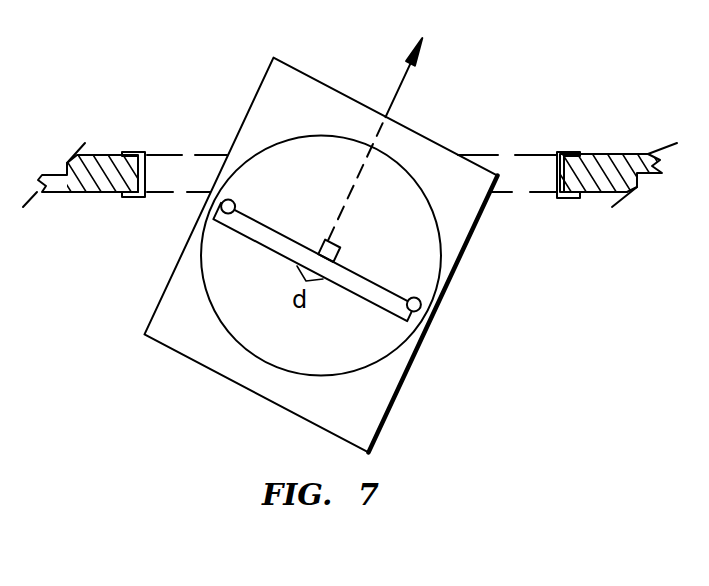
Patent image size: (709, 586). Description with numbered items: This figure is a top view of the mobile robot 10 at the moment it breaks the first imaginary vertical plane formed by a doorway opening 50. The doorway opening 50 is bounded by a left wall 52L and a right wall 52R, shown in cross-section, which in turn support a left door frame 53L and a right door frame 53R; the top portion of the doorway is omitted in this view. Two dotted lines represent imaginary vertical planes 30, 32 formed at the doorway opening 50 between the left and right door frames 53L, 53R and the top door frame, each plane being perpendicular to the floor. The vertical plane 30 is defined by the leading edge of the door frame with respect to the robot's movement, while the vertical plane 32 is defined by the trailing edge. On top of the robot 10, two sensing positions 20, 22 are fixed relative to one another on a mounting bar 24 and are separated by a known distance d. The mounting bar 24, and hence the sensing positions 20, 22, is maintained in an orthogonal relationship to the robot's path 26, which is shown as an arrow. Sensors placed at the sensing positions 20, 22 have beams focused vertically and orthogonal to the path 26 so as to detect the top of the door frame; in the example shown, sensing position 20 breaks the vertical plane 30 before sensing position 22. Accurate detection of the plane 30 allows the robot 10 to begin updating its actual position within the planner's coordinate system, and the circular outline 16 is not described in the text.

The robot 10 is at (395, 398).
The disk 16 is at (352, 371).
The sensing position 20 is at (236, 200).
The sensing position 22 is at (415, 297).
The mounting bar 24 is at (357, 274).
The robot's path 26 is at (408, 72).
The vertical plane 30 is at (513, 193).
The vertical plane 32 is at (547, 152).
The doorway opening 50 is at (503, 163).
The left wall 52L is at (75, 185).
The right wall 52R is at (600, 192).
The left door frame 53L is at (138, 197).
The right door frame 53R is at (570, 198).